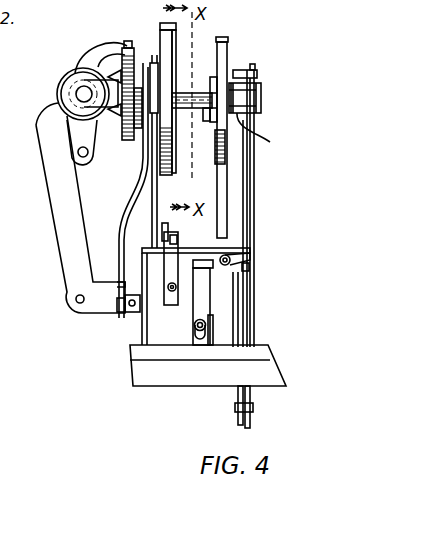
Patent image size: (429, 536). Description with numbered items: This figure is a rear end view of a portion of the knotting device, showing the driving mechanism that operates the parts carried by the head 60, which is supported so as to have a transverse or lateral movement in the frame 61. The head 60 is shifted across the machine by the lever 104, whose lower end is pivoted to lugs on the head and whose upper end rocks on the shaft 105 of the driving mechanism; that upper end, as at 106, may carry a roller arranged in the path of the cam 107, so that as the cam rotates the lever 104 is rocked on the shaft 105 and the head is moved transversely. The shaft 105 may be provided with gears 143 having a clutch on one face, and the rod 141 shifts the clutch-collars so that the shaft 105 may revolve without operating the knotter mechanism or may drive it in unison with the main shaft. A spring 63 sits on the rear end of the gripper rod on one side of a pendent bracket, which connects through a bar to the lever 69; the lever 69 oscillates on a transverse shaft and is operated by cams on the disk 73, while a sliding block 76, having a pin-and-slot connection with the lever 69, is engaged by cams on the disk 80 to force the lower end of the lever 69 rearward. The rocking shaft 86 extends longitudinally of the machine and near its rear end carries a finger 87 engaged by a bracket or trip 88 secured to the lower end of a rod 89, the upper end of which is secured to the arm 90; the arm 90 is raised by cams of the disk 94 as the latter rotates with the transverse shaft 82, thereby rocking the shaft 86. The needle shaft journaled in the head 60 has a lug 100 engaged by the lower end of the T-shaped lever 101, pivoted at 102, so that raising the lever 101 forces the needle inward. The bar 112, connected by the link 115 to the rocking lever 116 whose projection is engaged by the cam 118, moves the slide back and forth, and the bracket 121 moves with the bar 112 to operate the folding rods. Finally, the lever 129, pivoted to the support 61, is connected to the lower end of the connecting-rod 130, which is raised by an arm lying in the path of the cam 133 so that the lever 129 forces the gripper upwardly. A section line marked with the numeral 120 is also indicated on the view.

The head 60 is at (194, 314).
The frame 61 is at (205, 382).
The spring 63 is at (205, 300).
The lever 69 is at (222, 192).
The disk 73 is at (228, 44).
The sliding block 76 is at (213, 78).
The disk 80 is at (209, 118).
The transverse shaft 82 is at (187, 97).
The rocking shaft 86 is at (226, 267).
The finger 87 is at (232, 257).
The bracket or trip 88 is at (250, 268).
The rod 89 is at (254, 168).
The arm 90 is at (257, 73).
The disk 94 is at (262, 133).
The lug 100 is at (131, 309).
The vertically-movable lever 101 is at (124, 284).
The pivot 102 is at (128, 141).
The lever 104 is at (55, 188).
The shaft 105 is at (80, 92).
The upper end of lever 106 is at (100, 54).
The cam 107 is at (120, 142).
The bar 112 is at (180, 236).
The link 115 is at (168, 228).
The rocking lever 116 is at (160, 192).
The cam 118 is at (171, 26).
The rack bar 120 is at (161, 50).
The bracket 121 is at (174, 273).
The lever 129 is at (252, 424).
The connecting-rod 130 is at (254, 323).
The cam 133 is at (262, 104).
The rod 141 is at (76, 151).
The gears 143 is at (64, 106).